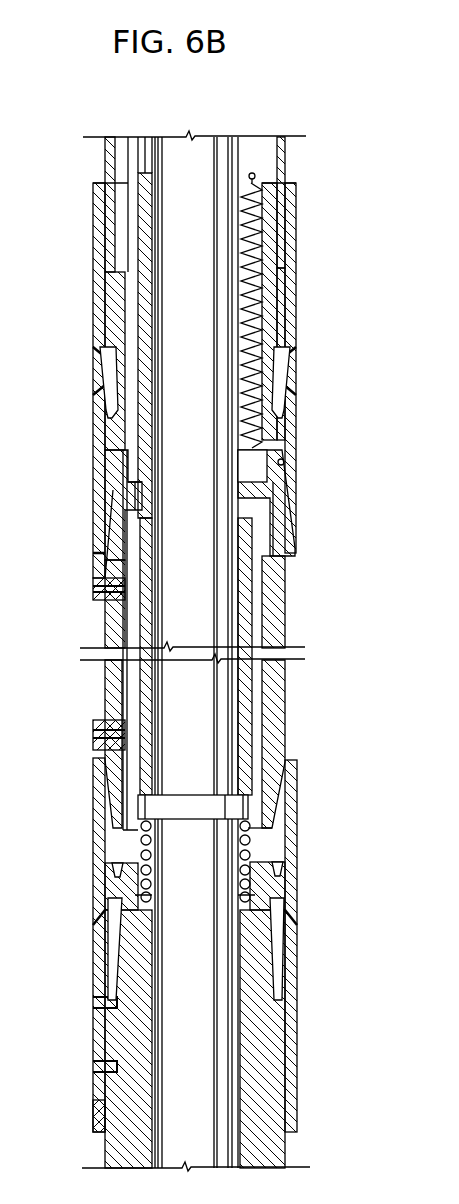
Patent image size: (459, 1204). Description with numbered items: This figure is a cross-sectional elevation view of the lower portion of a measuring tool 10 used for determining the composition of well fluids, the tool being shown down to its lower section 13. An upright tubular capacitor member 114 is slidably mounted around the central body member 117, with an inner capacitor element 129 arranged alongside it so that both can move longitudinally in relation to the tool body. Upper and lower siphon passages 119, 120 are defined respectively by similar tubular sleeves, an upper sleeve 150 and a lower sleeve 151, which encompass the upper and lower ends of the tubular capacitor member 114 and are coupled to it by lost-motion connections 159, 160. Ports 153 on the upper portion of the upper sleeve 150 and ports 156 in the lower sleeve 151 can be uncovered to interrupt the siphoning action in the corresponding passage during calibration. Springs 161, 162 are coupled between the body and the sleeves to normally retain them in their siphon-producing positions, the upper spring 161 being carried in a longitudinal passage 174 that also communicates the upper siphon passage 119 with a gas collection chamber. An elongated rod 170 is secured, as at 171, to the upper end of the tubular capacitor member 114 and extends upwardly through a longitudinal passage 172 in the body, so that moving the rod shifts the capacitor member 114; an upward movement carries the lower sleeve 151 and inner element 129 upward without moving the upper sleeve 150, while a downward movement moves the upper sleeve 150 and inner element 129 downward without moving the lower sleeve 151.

The downhole tool 10 is at (48, 296).
The lower tool section 13 is at (92, 1151).
The tubular capacitor member 114 is at (283, 699).
The central body member 117 is at (203, 466).
The upper siphon passage 119 is at (284, 462).
The lower siphon passage 120 is at (283, 840).
The inner capacitor element 129 is at (255, 606).
The upper sleeve 150 is at (288, 282).
The lower sleeve 151 is at (290, 1038).
The ports 153 is at (290, 368).
The ports 156 is at (290, 930).
The lost-motion connection 159 is at (93, 585).
The lost-motion connection 160 is at (93, 727).
The spring 161 is at (262, 216).
The spring 162 is at (143, 852).
The elongated rod 170 is at (135, 149).
The securing connection 171 is at (136, 489).
The longitudinal passage 172 is at (152, 288).
The longitudinal passage 174 is at (258, 313).